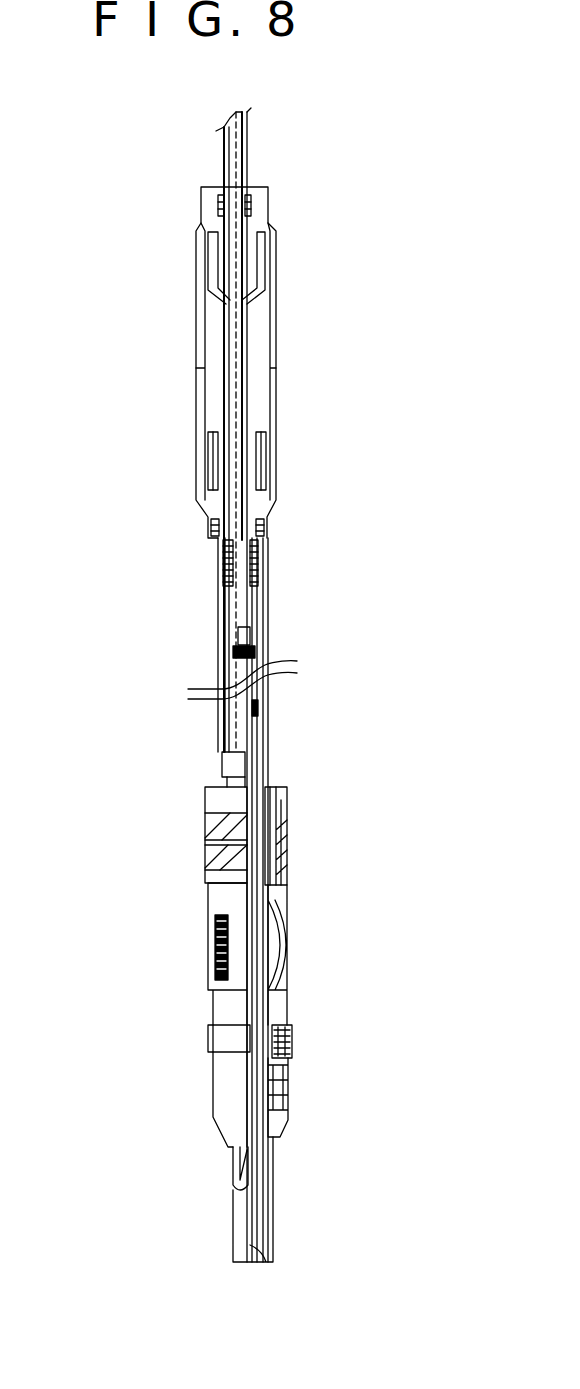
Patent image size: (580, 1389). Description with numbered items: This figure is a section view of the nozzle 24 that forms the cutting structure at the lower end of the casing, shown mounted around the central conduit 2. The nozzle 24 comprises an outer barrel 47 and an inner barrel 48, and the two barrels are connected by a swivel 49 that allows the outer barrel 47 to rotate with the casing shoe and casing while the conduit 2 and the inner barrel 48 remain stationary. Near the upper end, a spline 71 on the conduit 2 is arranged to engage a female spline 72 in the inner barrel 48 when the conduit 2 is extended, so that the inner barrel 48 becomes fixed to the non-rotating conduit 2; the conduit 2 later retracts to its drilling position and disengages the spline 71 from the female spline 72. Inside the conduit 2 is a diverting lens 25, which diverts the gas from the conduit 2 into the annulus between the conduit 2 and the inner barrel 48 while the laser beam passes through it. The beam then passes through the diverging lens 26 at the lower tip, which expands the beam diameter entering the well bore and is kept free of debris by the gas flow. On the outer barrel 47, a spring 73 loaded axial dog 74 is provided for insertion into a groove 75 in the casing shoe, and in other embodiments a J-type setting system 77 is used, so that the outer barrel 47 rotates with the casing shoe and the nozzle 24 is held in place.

The conduit 2 is at (222, 160).
The nozzle 24 is at (352, 268).
The spline 71 is at (222, 248).
The female spline 72 is at (222, 450).
The swivel 49 is at (282, 535).
The diverting lens 25 is at (235, 640).
The groove 75 is at (256, 712).
The outer barrel 47 is at (205, 826).
The inner barrel 48 is at (258, 832).
The axial dog 74 is at (208, 1030).
The spring 73 is at (292, 1032).
The J-type setting system 77 is at (235, 1162).
The diverging lens 26 is at (255, 1262).